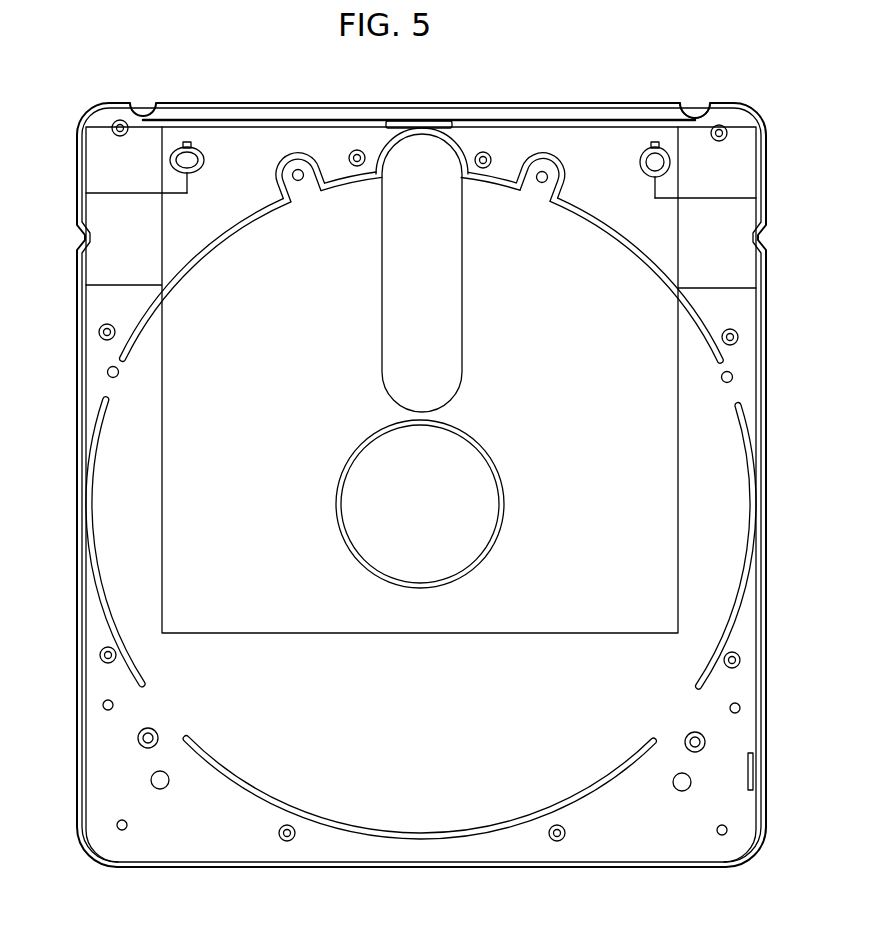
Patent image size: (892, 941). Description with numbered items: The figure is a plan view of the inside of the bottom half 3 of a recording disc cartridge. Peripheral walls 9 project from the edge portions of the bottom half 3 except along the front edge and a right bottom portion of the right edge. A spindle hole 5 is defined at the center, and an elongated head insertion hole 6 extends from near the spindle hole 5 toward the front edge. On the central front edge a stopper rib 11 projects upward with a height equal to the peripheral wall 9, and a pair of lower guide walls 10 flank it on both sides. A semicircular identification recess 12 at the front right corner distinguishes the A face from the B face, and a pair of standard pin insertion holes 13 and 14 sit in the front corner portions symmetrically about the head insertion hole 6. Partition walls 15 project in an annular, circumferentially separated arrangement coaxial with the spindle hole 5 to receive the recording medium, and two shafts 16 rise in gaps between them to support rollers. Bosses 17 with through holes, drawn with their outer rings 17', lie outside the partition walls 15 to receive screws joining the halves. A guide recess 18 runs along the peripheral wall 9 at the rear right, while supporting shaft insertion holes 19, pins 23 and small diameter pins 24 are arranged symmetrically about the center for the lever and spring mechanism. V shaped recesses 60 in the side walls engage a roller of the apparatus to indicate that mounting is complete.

The bottom half 3 is at (748, 109).
The spindle hole 5 is at (376, 441).
The head insertion hole 6 is at (381, 325).
The peripheral wall 9 is at (88, 262).
The guide wall 10 is at (271, 114).
The stopper rib 11 is at (420, 122).
The identification recess 12 is at (698, 111).
The standard pin insertion hole 13 is at (647, 156).
The standard pin insertion hole 14 is at (197, 152).
The partition walls 15 is at (226, 232).
The shaft 16 is at (299, 181).
The boss 17 is at (421, 512).
The holes 17' is at (421, 482).
The guide recess 18 is at (755, 628).
The supporting shaft insertion hole 19 is at (152, 730).
The pin 23 is at (151, 780).
The pin of a small diameter 24 is at (128, 826).
The V shaped recess 60 is at (80, 241).